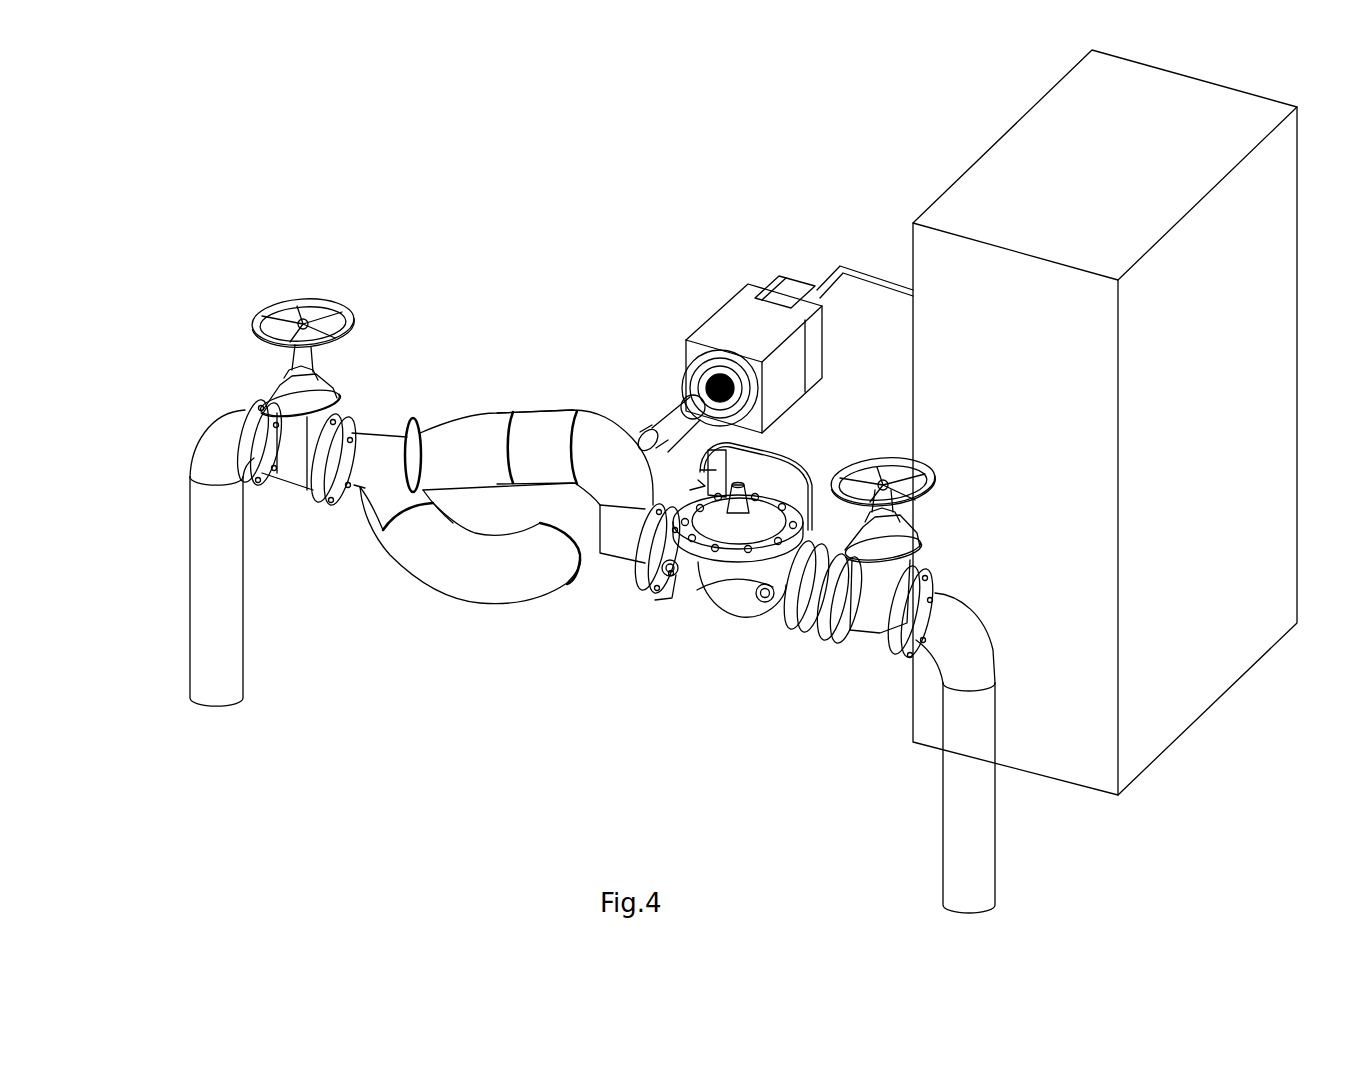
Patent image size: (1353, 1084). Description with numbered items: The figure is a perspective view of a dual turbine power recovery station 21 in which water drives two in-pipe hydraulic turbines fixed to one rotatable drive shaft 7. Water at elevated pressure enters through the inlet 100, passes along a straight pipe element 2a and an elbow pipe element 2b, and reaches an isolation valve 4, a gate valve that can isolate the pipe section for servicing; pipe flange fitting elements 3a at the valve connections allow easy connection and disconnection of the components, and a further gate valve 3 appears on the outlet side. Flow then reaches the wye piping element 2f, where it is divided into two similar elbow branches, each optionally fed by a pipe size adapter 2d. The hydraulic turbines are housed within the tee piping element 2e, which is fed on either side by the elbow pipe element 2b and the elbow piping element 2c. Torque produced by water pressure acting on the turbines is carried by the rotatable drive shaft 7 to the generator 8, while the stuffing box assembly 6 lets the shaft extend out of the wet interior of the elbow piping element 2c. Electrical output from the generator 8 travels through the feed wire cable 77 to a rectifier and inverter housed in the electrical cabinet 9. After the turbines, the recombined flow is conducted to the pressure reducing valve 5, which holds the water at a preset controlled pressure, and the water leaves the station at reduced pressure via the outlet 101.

The straight pipe element 2a is at (188, 592).
The elbow pipe element 2b is at (200, 430).
The elbow piping element 2c is at (612, 437).
The pipe size adapter 2d is at (452, 425).
The tee piping element 2e is at (625, 535).
The wye piping element 2f is at (357, 522).
The gate valve 3 is at (900, 645).
The pipe flange fitting element 3a is at (262, 390).
The isolation valve 4 is at (272, 390).
The pressure reducing valve 5 is at (712, 598).
The stuffing box assembly 6 is at (643, 433).
The rotatable drive shaft 7 is at (670, 427).
The generator 8 is at (727, 307).
The electrical cabinet 9 is at (978, 148).
The dual turbine power recovery station 21 is at (553, 803).
The feed wire cable 77 is at (847, 257).
The inlet 100 is at (222, 729).
The outlet 101 is at (972, 938).